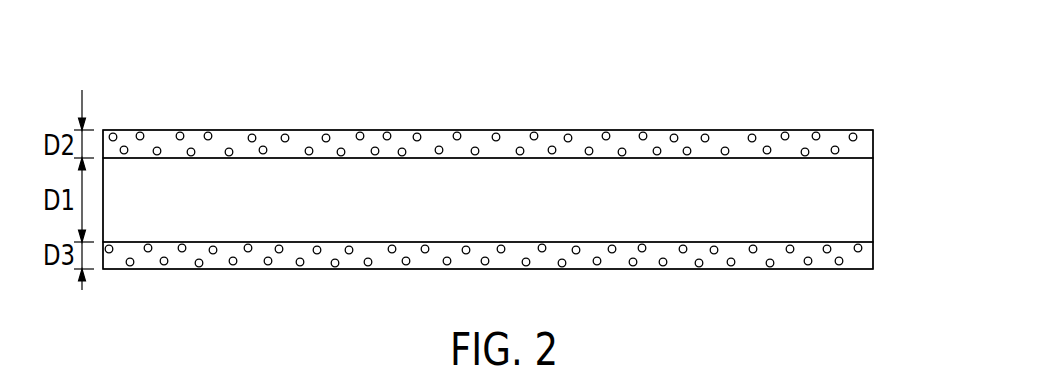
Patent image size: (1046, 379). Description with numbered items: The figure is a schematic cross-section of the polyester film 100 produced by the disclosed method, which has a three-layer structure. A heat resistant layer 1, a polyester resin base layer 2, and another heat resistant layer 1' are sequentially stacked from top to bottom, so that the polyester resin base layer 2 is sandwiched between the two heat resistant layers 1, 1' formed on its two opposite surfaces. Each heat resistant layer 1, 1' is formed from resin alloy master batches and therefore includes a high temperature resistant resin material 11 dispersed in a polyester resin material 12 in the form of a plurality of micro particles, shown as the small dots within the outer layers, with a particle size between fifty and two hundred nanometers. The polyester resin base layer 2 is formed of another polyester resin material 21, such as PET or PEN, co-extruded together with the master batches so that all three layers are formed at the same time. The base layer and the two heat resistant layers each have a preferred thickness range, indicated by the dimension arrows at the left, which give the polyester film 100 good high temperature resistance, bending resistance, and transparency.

The polyester film 100 is at (939, 73).
The heat resistant layer 1 is at (533, 143).
The heat resistant layer 1' is at (537, 255).
The polyester resin base layer 2 is at (888, 198).
The high temperature resistant resin material 11 is at (285, 140).
The polyester resin material 12 is at (452, 138).
The another polyester resin material 21 is at (651, 180).